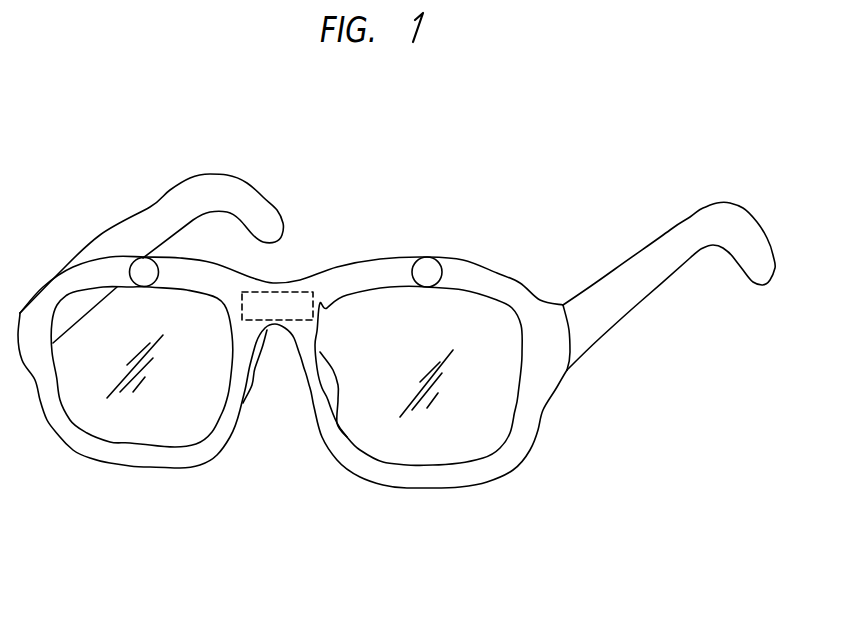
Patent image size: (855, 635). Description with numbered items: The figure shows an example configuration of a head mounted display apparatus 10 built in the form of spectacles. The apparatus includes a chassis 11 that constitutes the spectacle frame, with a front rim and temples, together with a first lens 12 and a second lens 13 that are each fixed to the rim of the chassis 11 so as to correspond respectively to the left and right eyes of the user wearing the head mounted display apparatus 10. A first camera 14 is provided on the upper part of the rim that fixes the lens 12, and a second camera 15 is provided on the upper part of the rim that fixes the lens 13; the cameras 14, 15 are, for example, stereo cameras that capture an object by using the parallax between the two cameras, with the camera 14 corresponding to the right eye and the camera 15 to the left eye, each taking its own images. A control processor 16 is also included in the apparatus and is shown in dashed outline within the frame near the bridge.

The head mounted display apparatus 10 is at (341, 500).
The chassis 11 is at (731, 196).
The lens 12 is at (140, 430).
The lens 13 is at (437, 448).
The camera 14 is at (143, 267).
The camera 15 is at (427, 270).
The control processor 16 is at (297, 300).